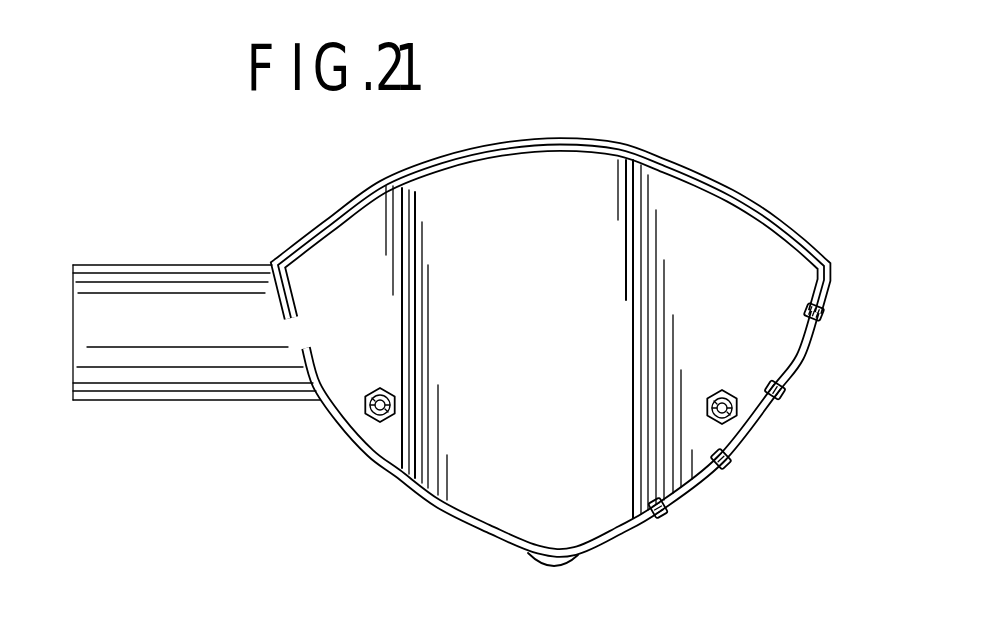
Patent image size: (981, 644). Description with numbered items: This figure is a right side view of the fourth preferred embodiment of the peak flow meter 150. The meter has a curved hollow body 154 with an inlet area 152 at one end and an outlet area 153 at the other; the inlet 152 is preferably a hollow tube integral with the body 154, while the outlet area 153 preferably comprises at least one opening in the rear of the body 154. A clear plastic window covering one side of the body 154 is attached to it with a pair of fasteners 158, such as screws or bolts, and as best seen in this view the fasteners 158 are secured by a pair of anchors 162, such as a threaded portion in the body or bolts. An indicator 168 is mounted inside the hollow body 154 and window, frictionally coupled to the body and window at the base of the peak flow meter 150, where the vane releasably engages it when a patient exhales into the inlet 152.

The peak flow meter 150 is at (594, 122).
The inlet area 152 is at (72, 305).
The outlet area 153 is at (822, 325).
The curved hollow body 154 is at (437, 195).
The fasteners 158 is at (398, 410).
The anchors 162 is at (367, 408).
The indicator 168 is at (548, 567).